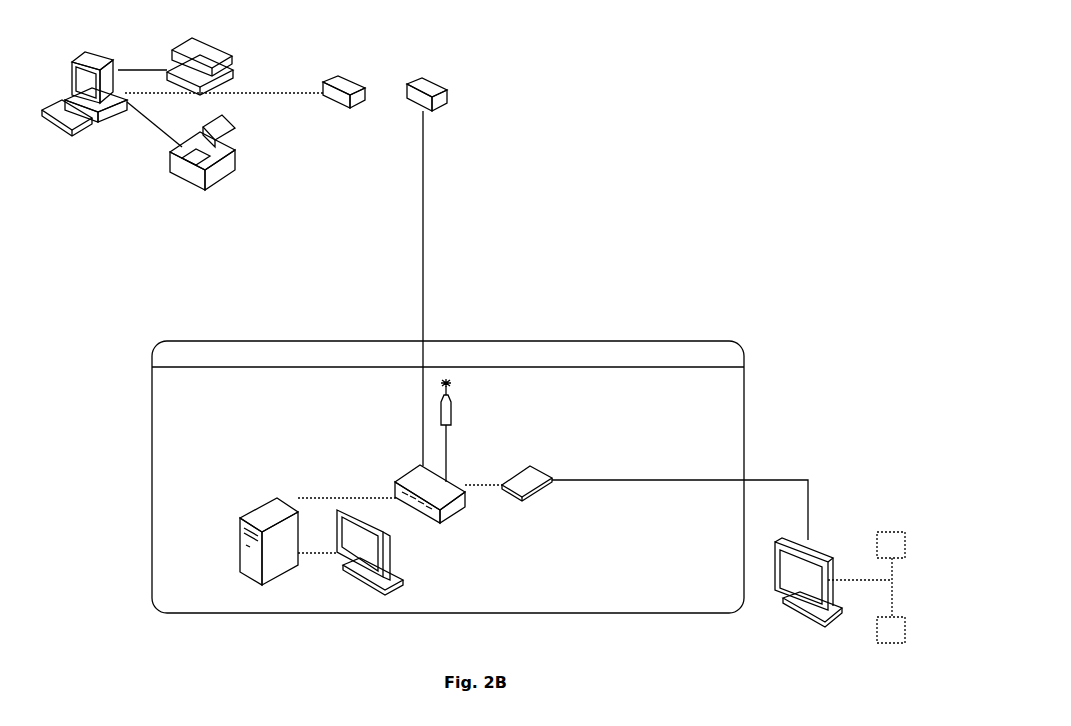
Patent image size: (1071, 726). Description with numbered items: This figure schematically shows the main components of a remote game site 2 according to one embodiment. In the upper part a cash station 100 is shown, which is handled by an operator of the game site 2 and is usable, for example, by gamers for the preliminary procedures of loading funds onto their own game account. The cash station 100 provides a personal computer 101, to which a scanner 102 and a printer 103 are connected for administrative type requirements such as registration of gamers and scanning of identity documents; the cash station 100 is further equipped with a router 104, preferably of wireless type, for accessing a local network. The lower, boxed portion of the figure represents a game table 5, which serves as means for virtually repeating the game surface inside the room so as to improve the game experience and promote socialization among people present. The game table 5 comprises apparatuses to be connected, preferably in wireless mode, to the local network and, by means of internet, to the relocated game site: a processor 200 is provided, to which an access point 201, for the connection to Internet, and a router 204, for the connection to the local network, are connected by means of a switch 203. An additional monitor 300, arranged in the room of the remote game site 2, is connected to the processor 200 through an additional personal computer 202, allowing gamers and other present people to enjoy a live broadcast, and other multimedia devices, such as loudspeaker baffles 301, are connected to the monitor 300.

The remote game site 2 is at (712, 183).
The game table 5 is at (603, 338).
The cash station 100 is at (138, 198).
The personal computer 101 is at (105, 123).
The scanner 102 is at (238, 60).
The printer 103 is at (238, 170).
The router 104 is at (355, 115).
The processor 200 is at (287, 575).
The access point 201 is at (460, 413).
The additional personal computer 202 is at (538, 498).
The switch 203 is at (457, 520).
The router 204 is at (443, 117).
The additional monitor 300 is at (820, 552).
The loudspeaker baffles 301 is at (907, 562).